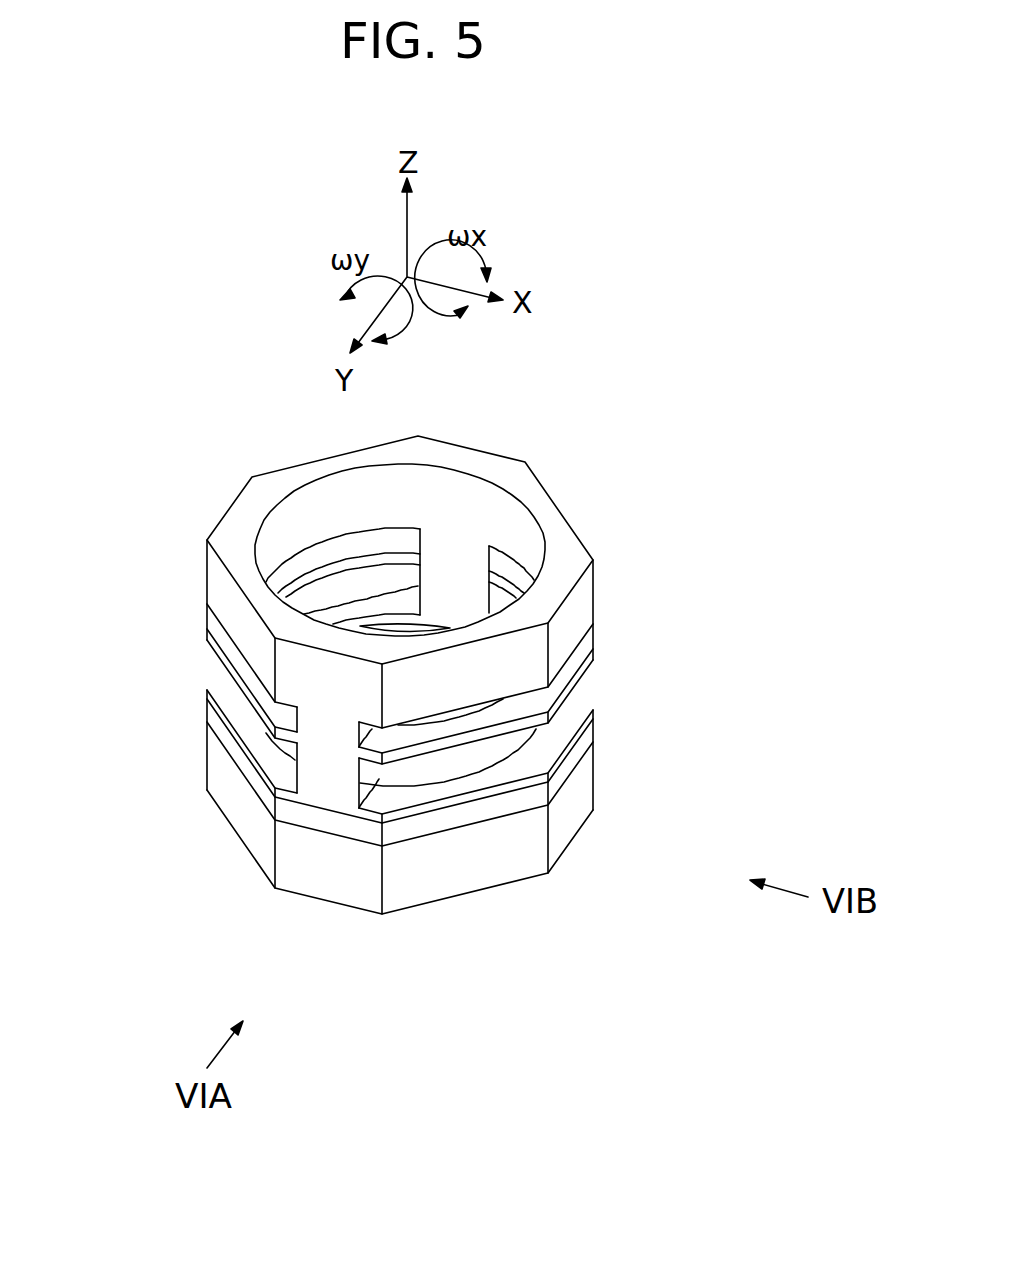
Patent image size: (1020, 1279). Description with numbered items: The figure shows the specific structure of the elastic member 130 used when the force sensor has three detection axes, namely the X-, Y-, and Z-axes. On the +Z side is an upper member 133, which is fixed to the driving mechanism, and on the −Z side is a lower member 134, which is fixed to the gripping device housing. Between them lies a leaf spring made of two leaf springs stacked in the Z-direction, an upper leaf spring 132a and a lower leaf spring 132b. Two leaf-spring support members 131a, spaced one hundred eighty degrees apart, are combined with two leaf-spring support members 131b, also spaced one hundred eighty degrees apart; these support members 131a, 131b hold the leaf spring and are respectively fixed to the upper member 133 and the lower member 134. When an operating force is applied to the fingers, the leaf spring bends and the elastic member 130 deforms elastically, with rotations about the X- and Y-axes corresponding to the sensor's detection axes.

The elastic member 130 is at (584, 497).
The leaf-spring support member 131a is at (327, 752).
The leaf-spring support member 131b is at (578, 708).
The upper leaf spring 132a is at (510, 728).
The lower leaf spring 132b is at (443, 800).
The upper member 133 is at (218, 597).
The lower member 134 is at (313, 878).